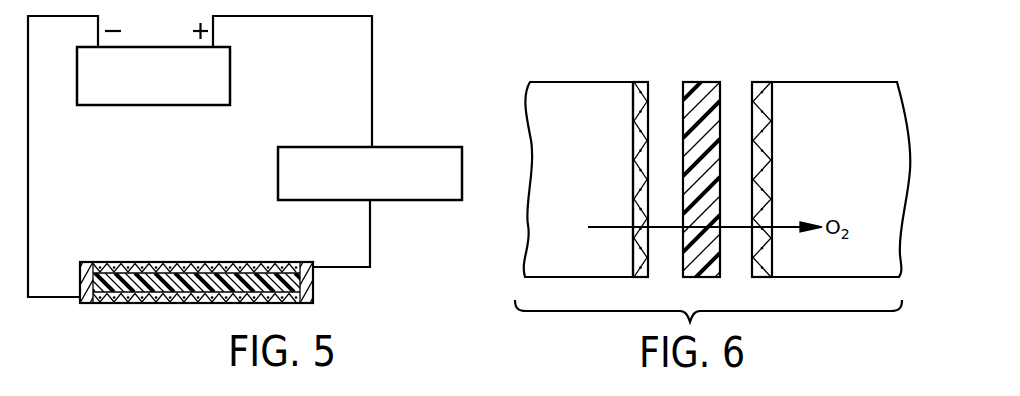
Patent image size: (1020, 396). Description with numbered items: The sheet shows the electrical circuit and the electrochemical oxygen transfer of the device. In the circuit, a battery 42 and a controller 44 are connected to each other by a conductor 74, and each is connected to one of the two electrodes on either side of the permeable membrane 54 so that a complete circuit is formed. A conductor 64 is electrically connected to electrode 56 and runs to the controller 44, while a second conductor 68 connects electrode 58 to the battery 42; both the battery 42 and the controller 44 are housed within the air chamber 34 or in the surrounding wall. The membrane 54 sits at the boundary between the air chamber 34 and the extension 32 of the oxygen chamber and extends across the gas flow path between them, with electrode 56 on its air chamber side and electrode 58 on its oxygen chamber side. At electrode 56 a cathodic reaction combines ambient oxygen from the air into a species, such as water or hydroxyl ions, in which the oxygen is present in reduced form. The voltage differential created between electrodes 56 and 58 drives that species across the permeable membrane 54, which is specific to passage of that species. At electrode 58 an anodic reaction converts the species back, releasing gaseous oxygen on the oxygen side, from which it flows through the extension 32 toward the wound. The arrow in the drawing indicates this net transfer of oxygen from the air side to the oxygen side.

In FIG. 6, the extension 32 is at (872, 95).
In FIG. 6, the air chamber 34 is at (563, 91).
In FIG. 5, the battery 42 is at (160, 105).
In FIG. 5, the controller 44 is at (397, 147).
In FIG. 5, the permeable membrane 54 is at (240, 282).
In FIG. 6, the permeable membrane 54 is at (706, 82).
In FIG. 5, the electrode 56 is at (170, 262).
In FIG. 6, the electrode 56 is at (640, 120).
In FIG. 5, the electrode 58 is at (153, 299).
In FIG. 6, the electrode 58 is at (768, 128).
In FIG. 5, the conductor 64 is at (372, 238).
In FIG. 5, the second conductor 68 is at (28, 143).
In FIG. 5, the conductor 74 is at (372, 62).